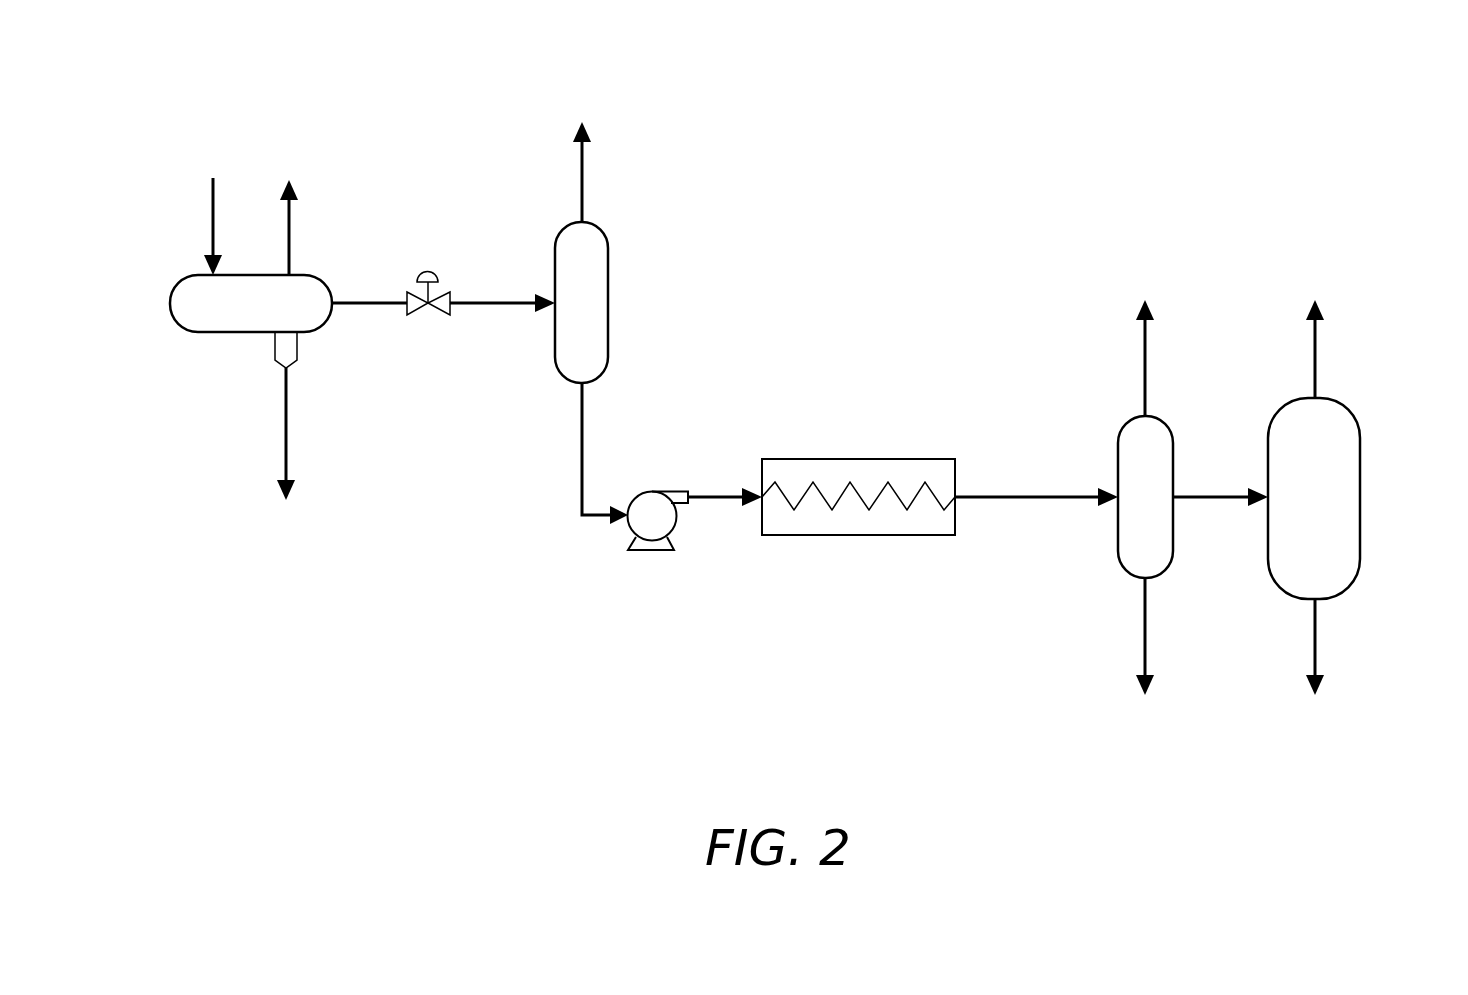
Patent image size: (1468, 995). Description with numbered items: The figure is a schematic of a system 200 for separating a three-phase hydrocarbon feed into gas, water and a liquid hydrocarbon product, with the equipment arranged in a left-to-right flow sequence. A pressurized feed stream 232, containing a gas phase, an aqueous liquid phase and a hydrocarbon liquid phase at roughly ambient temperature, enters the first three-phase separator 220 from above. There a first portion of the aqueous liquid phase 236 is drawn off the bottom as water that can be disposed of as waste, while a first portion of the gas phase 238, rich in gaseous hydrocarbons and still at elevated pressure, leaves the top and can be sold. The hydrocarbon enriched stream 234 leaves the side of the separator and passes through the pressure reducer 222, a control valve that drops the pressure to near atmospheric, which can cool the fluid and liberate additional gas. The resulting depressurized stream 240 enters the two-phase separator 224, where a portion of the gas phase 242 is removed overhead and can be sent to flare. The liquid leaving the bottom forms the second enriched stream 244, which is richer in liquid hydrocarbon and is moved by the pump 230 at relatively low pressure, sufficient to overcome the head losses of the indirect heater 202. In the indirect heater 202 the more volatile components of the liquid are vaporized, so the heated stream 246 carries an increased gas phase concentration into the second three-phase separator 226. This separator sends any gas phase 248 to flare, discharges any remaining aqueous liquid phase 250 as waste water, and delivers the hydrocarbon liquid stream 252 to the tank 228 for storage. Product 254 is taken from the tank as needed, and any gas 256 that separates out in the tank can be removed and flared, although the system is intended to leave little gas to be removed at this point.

The system 200 is at (1178, 78).
The indirect heater 202 is at (837, 535).
The first three-phase separator 220 is at (207, 332).
The pressure reducer 222 is at (438, 315).
The two-phase separator 224 is at (608, 330).
The second three-phase separator 226 is at (1118, 453).
The tank 228 is at (1360, 549).
The pump 230 is at (638, 550).
The feed stream 232 is at (213, 227).
The hydrocarbon enriched stream 234 is at (368, 310).
The first portion of the aqueous liquid phase 236 is at (286, 452).
The first portion of the gas phase 238 is at (289, 227).
The depressurized stream 240 is at (503, 300).
The portion of the gas phase 242 is at (582, 187).
The second enriched stream 244 is at (582, 448).
The heated stream 246 is at (1047, 500).
The gas phase 248 is at (1145, 361).
The aqueous liquid phase 250 is at (1145, 645).
The hydrocarbon liquid stream 252 is at (1222, 494).
The product 254 is at (1315, 648).
The gas 256 is at (1315, 359).